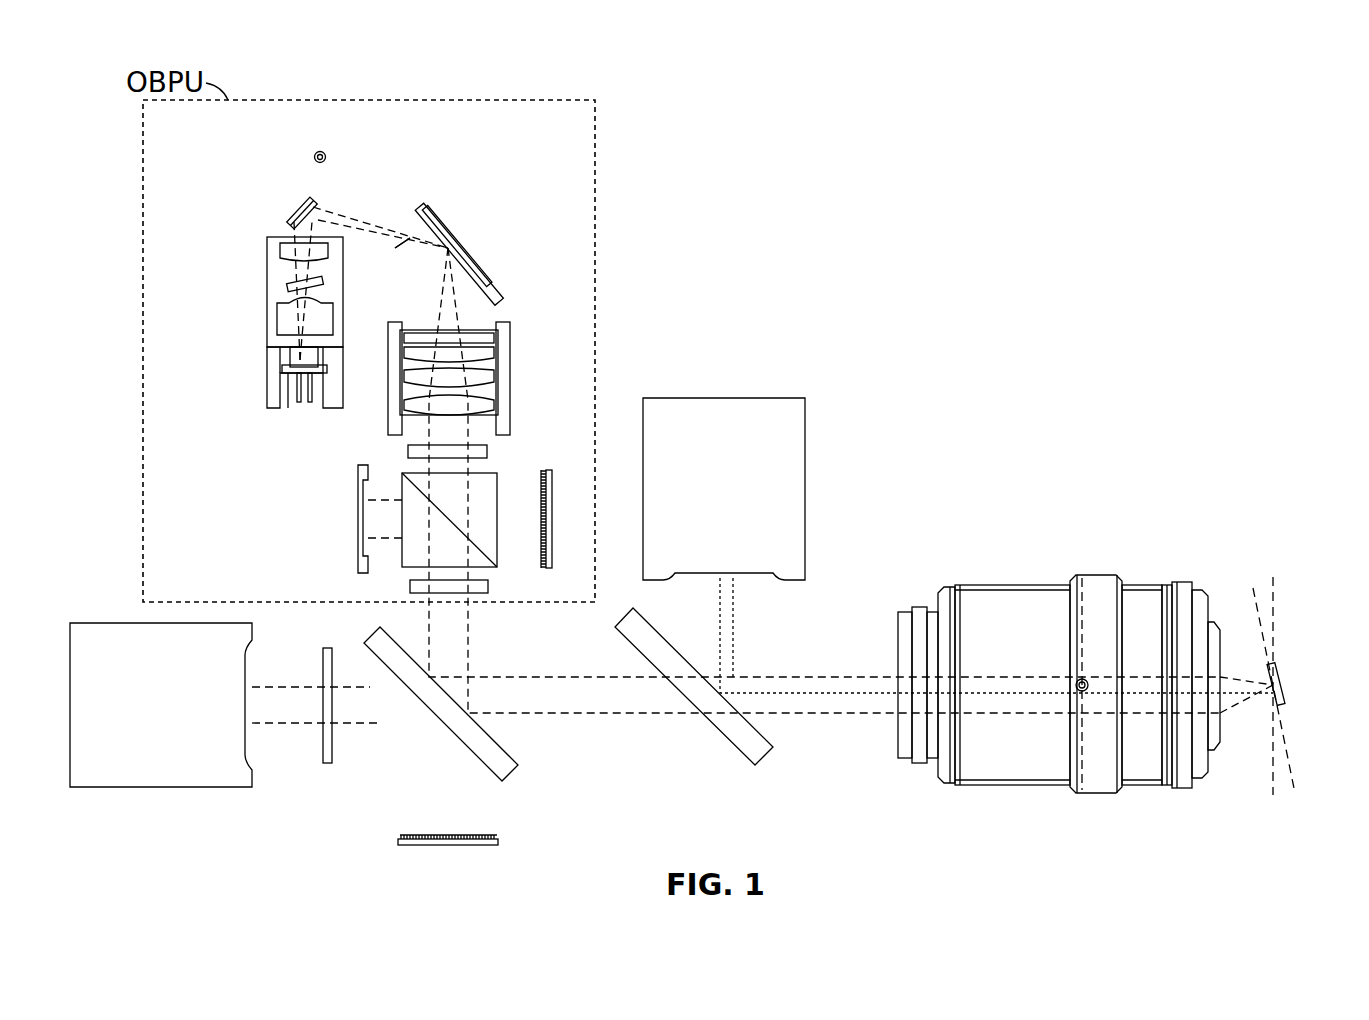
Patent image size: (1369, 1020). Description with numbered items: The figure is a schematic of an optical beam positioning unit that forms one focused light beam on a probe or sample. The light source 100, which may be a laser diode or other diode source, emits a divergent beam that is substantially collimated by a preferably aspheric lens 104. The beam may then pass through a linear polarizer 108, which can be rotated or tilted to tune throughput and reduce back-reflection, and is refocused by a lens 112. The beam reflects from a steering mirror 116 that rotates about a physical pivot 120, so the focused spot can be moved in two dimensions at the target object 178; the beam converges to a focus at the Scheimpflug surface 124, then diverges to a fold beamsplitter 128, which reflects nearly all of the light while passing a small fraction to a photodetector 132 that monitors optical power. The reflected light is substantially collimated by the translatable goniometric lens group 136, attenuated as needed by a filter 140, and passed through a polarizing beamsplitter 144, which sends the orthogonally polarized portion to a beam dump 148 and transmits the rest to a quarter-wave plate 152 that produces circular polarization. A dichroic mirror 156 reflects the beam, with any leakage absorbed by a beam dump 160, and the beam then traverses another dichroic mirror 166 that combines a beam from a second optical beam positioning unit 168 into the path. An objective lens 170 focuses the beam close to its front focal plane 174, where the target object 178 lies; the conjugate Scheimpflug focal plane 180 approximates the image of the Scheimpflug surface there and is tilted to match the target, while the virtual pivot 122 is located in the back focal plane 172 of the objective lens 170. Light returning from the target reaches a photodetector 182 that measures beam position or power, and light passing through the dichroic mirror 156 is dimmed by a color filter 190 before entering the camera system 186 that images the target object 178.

The light source 100 is at (290, 370).
The lens 104 is at (280, 318).
The linear polarizer 108 is at (290, 283).
The lens 112 is at (282, 250).
The steering mirror 116 is at (292, 212).
The physical pivot 120 is at (315, 153).
The virtual pivot 122 is at (1078, 693).
The Scheimpflug surface 124 is at (413, 233).
The fold beamsplitter 128 is at (432, 210).
The photodetector 132 is at (490, 268).
The goniometric lens group 136 is at (510, 352).
The filter 140 is at (488, 452).
The polarizing beamsplitter 144 is at (498, 550).
The beam dump 148 is at (552, 550).
The quarter-wave plate 152 is at (472, 594).
The dichroic mirror 156 is at (468, 742).
The beam dump 160 is at (500, 840).
The dichroic mirror 166 is at (725, 733).
The optical beam positioning unit 168 is at (774, 398).
The objective lens 170 is at (1005, 585).
The back focal plane 172 is at (1082, 603).
The front focal plane 174 is at (1280, 598).
The target object 178 is at (1286, 682).
The conjugate Scheimpflug focal plane 180 is at (1254, 590).
The photodetector 182 is at (358, 520).
The camera system 186 is at (104, 623).
The color filter 190 is at (327, 764).